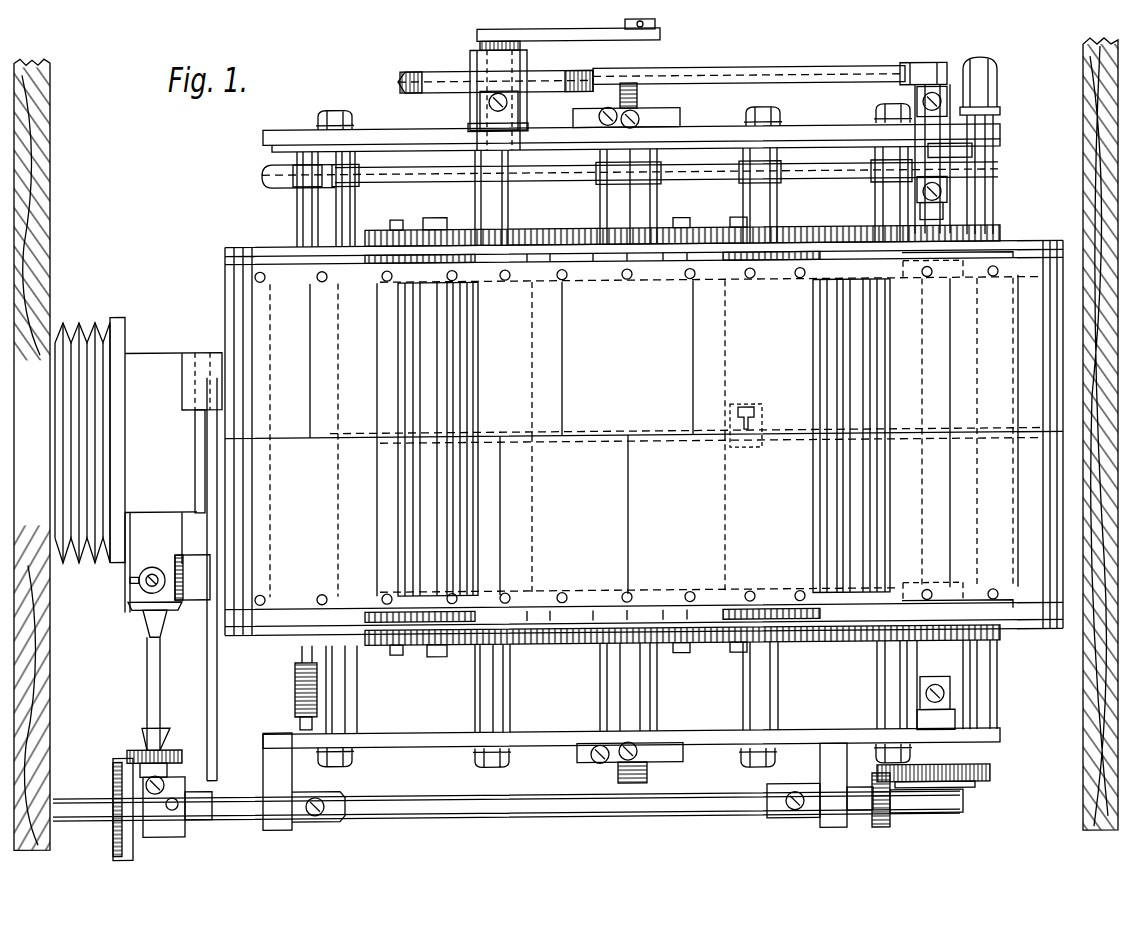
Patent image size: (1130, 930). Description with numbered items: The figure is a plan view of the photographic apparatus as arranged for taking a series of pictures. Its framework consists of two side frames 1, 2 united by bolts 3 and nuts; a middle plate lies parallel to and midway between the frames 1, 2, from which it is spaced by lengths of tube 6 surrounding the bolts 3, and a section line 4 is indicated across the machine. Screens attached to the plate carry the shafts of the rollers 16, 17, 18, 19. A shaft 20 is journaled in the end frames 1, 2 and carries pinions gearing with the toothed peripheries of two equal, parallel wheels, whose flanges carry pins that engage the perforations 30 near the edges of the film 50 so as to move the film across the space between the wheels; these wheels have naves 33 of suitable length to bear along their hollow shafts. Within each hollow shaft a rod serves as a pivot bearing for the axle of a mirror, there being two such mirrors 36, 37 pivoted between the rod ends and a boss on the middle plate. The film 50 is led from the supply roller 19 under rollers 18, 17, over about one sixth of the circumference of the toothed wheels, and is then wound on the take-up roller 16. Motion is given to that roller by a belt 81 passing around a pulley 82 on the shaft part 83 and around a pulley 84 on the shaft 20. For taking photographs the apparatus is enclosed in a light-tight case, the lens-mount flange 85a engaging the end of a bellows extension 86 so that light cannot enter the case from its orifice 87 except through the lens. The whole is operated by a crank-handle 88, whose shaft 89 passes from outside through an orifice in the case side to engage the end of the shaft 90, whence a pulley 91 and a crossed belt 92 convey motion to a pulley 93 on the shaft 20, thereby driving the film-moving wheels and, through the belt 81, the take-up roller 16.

The side frame 1 is at (805, 126).
The side frame 2 is at (717, 745).
The bolts 3 is at (341, 108).
The section line 4 is at (513, 756).
The lengths of tube 6 is at (352, 210).
The roller 16 is at (247, 297).
The roller 17 is at (404, 395).
The roller 18 is at (823, 380).
The roller 19 is at (1007, 380).
The shaft 20 is at (950, 218).
The perforations 30 is at (690, 278).
The naves 33 is at (607, 195).
The mirror 36 is at (537, 332).
The mirror 37 is at (537, 503).
The film 50 is at (596, 438).
The belt 81 is at (815, 170).
The pulley 82 is at (298, 229).
The shaft part 83 is at (281, 185).
The pulley 84 is at (955, 157).
The lens-mount flange 85a is at (125, 338).
The bellows extension 86 is at (82, 320).
The orifice 87 is at (32, 454).
The crank-handle 88 is at (590, 36).
The shaft 89 is at (478, 41).
The shaft 90 is at (512, 52).
The pulley 91 is at (562, 89).
The crossed belt 92 is at (700, 72).
The pulley 93 is at (912, 66).